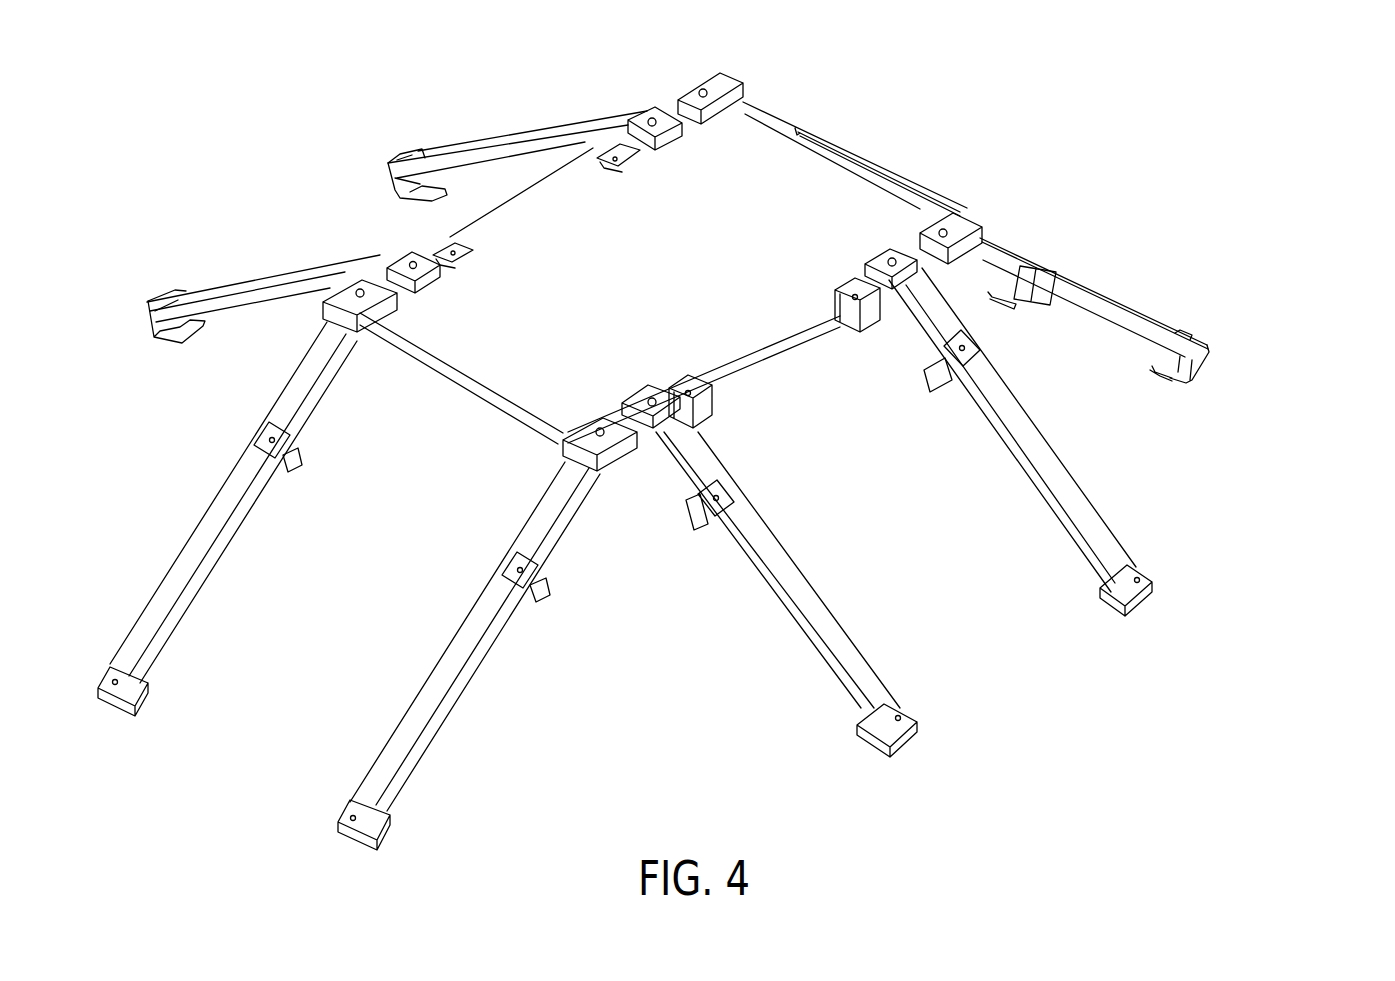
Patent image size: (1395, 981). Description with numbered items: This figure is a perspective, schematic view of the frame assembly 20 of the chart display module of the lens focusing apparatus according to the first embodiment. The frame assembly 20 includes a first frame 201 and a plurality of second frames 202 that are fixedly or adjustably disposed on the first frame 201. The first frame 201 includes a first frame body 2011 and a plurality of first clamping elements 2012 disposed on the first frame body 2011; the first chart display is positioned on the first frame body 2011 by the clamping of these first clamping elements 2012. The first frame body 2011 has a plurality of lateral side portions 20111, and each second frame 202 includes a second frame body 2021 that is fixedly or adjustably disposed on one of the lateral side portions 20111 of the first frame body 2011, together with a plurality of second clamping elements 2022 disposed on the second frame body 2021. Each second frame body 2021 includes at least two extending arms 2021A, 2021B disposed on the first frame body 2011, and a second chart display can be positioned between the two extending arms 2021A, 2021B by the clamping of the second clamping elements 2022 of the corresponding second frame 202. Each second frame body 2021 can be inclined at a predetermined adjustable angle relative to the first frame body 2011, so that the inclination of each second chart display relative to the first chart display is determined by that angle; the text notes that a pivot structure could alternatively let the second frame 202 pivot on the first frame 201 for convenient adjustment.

The frame assembly 20 is at (730, 445).
The first frame 201 is at (1130, 368).
The first frame body 2011 is at (988, 322).
The first clamping element 2012 is at (950, 375).
The second frame 202 is at (704, 559).
The second frame body 2021 is at (889, 512).
The extending arm 2021A is at (780, 567).
The extending arm 2021B is at (1087, 510).
The second clamping element 2022 is at (1147, 578).
The lateral side portion 20111 is at (843, 188).